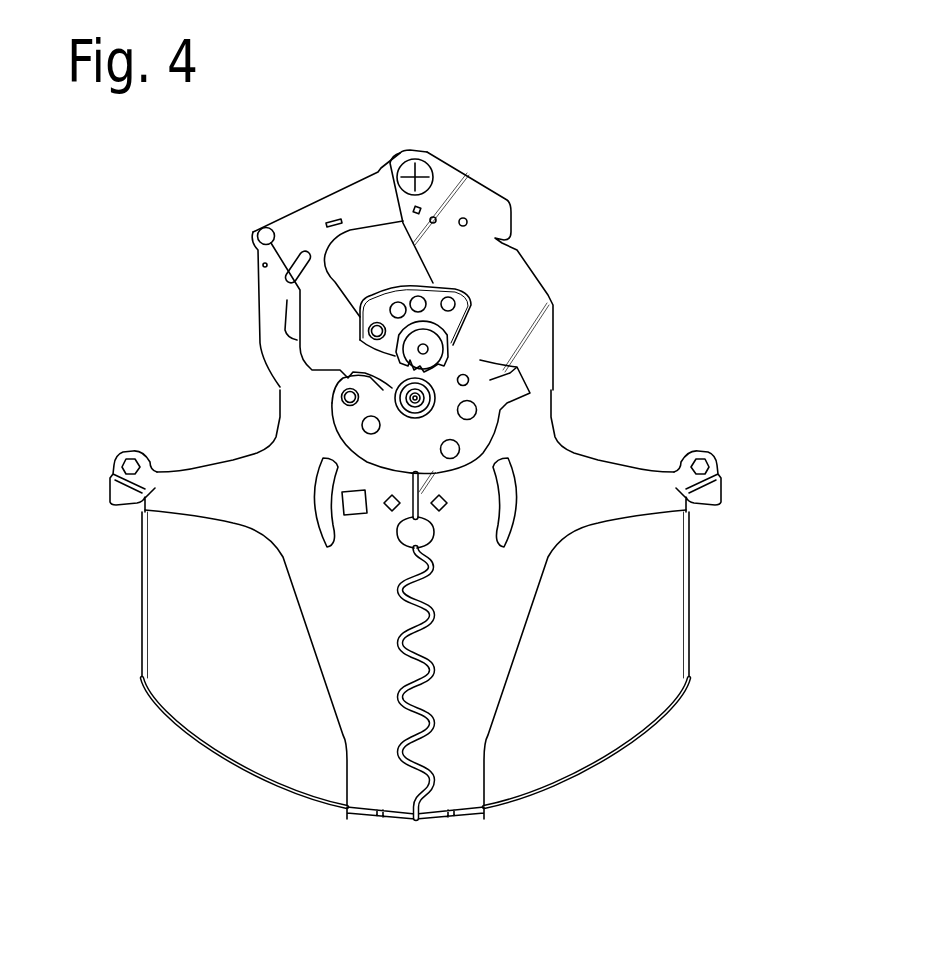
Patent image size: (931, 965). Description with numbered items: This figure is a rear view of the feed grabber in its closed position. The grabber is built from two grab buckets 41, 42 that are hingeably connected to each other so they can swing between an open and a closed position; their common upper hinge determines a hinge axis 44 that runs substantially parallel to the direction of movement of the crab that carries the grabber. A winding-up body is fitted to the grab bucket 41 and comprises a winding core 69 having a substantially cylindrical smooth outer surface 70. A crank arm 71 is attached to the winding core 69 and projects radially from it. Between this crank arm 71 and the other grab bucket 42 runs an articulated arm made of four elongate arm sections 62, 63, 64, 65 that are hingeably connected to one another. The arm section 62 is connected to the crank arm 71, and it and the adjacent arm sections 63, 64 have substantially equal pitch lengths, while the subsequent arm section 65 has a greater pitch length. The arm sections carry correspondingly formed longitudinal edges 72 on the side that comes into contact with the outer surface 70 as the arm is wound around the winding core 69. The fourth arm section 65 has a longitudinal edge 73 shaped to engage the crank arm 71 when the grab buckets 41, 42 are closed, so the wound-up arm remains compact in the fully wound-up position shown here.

The grab bucket 41 is at (603, 629).
The grab bucket 42 is at (255, 641).
The hinge axis 44 is at (418, 178).
The arm section 62 is at (387, 365).
The arm section 63 is at (368, 318).
The arm section 64 is at (470, 342).
The arm section 65 is at (467, 433).
The winding core 69 is at (467, 340).
The outer surface 70 is at (468, 350).
The crank arm 71 is at (433, 368).
The longitudinal edges 72 is at (457, 347).
The longitudinal edge 73 is at (408, 402).